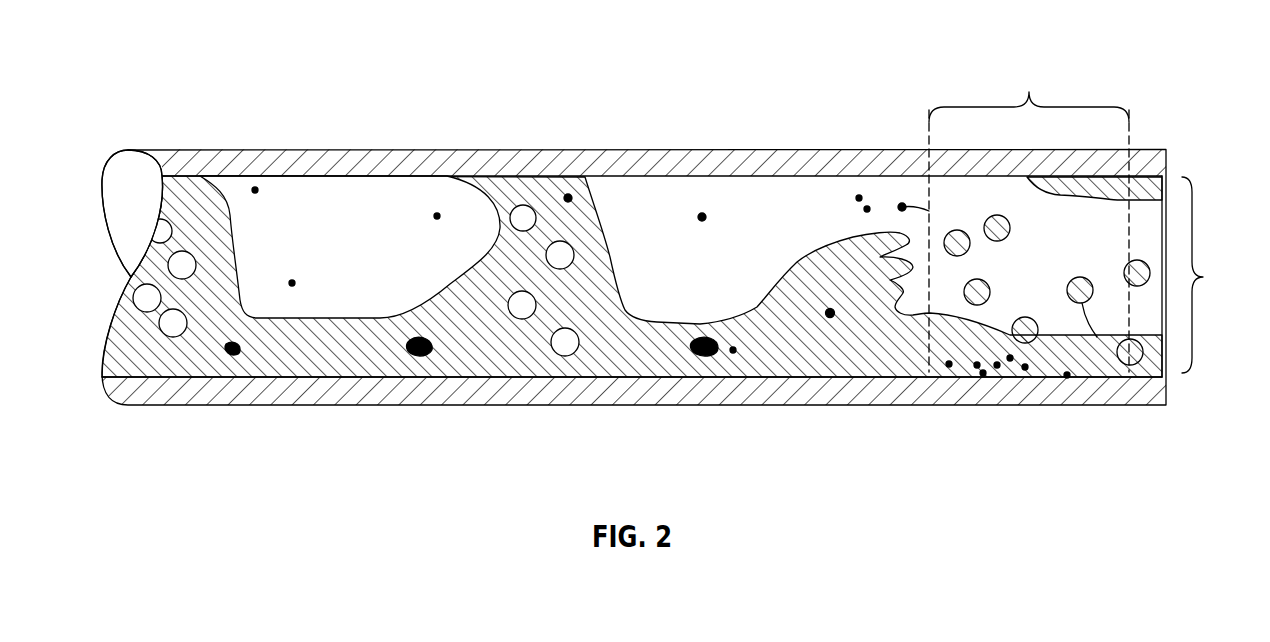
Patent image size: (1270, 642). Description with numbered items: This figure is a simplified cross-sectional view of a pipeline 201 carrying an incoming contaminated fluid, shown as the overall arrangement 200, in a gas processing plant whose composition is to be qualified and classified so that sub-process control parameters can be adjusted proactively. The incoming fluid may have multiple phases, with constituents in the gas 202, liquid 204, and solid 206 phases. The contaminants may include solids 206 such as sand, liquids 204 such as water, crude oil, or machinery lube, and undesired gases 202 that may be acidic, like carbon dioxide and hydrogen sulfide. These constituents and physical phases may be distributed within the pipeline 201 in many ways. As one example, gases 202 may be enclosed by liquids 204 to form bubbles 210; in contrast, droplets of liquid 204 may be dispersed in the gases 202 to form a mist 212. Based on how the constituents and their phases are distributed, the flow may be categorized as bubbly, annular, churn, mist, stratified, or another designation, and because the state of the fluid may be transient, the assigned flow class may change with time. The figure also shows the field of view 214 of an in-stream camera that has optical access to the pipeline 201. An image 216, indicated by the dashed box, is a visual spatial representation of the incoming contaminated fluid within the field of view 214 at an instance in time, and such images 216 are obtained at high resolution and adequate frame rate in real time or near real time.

The heat pipe assembly 200 is at (362, 40).
The pipeline 201 is at (255, 162).
The gas 202 is at (597, 362).
The liquid 204 is at (645, 298).
The solid 206 is at (568, 196).
The bubbles 210 is at (177, 338).
The mist 212 is at (1138, 286).
The field of view 214 is at (1091, 216).
The image 216 is at (902, 206).